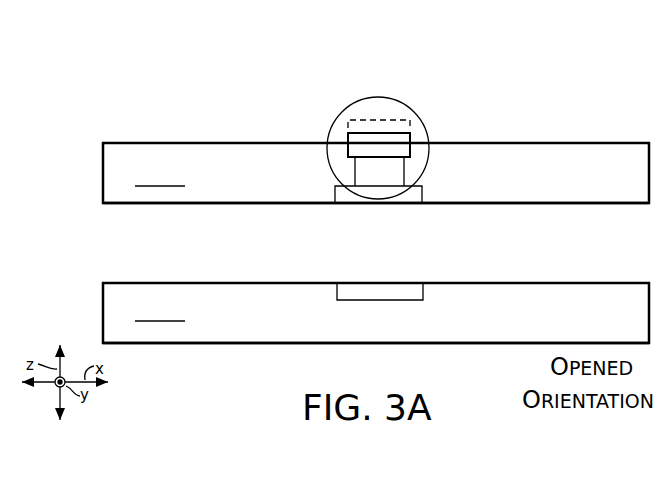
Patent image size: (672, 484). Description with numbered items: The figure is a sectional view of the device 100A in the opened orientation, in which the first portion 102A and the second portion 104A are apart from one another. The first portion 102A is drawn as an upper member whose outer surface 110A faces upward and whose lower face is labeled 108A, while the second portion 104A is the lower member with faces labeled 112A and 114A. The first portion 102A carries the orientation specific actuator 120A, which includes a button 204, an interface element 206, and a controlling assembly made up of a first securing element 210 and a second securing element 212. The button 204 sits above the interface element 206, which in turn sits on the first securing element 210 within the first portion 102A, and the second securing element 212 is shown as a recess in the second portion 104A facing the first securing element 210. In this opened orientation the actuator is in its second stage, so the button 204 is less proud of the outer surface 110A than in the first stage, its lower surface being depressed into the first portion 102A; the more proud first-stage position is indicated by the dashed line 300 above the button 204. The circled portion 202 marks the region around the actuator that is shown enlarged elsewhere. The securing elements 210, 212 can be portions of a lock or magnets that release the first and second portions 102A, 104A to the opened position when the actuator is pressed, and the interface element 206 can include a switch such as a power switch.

The device 100A is at (559, 72).
The first portion 102A is at (376, 173).
The second portion 104A is at (376, 313).
The inner surface of first housing portion 108A is at (487, 207).
The outer surface 110A is at (191, 142).
The inner surface of second housing portion 112A is at (149, 279).
The outer surface of second housing portion 114A is at (180, 347).
The orientation specific actuator 120A is at (252, 74).
The portion 202 is at (352, 104).
The button 204 is at (400, 140).
The interface element 206 is at (397, 170).
The first securing element 210 is at (338, 190).
The second securing element 212 is at (413, 292).
The dashed line 300 is at (376, 116).